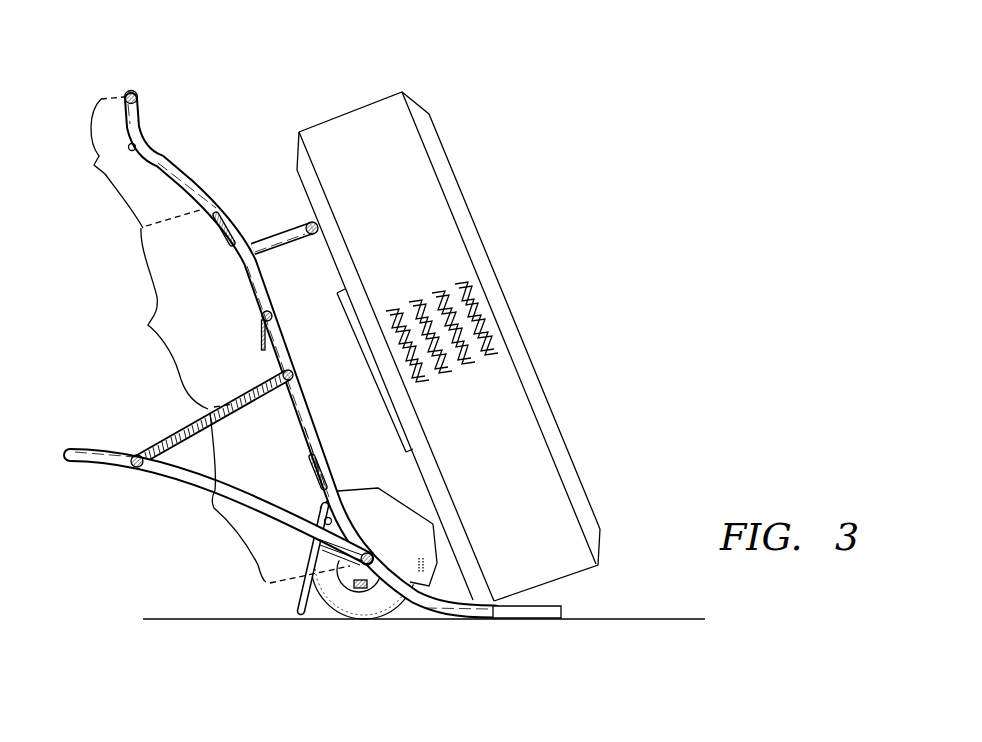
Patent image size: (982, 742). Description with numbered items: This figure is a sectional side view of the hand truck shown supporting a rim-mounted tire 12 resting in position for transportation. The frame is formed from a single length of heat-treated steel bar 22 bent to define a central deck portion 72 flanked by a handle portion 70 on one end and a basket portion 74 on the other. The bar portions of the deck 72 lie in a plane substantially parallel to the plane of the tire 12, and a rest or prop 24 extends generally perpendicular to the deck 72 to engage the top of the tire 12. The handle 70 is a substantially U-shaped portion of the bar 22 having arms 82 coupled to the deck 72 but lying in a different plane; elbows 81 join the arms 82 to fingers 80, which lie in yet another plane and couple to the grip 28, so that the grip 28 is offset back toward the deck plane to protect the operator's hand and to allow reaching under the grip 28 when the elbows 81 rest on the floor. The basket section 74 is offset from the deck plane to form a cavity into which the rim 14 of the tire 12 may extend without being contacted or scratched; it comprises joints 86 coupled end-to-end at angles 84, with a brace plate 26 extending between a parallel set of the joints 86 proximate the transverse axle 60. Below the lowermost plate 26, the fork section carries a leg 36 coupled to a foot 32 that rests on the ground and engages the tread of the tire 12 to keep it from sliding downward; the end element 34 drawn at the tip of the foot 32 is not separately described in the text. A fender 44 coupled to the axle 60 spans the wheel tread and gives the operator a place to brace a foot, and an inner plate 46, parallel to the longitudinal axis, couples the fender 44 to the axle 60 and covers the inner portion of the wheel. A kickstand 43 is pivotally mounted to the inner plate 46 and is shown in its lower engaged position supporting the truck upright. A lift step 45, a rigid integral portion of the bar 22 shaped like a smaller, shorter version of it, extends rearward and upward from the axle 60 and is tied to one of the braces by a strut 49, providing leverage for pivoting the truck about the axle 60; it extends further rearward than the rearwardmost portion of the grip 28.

The rim-mounted tire 12 is at (334, 259).
The rim 14 is at (337, 292).
The steel bar 22 is at (255, 296).
The rest or prop 24 is at (280, 231).
The brace plate 26 is at (311, 469).
The grip 28 is at (124, 93).
The foot 32 is at (515, 619).
The foot 34 is at (563, 609).
The leg 36 is at (427, 598).
The kickstand 43 is at (297, 594).
The fender 44 is at (400, 502).
The lift step 45 is at (83, 448).
The inner plate 46 is at (367, 502).
The strut 49 is at (191, 436).
The axle 60 is at (358, 565).
The handle portion 70 is at (134, 162).
The central deck portion 72 is at (175, 318).
The basket portion 74 is at (267, 498).
The finger 80 is at (142, 108).
The elbow 81 is at (135, 145).
The arm 82 is at (167, 156).
The angle 84 is at (297, 379).
The joint 86 is at (305, 401).